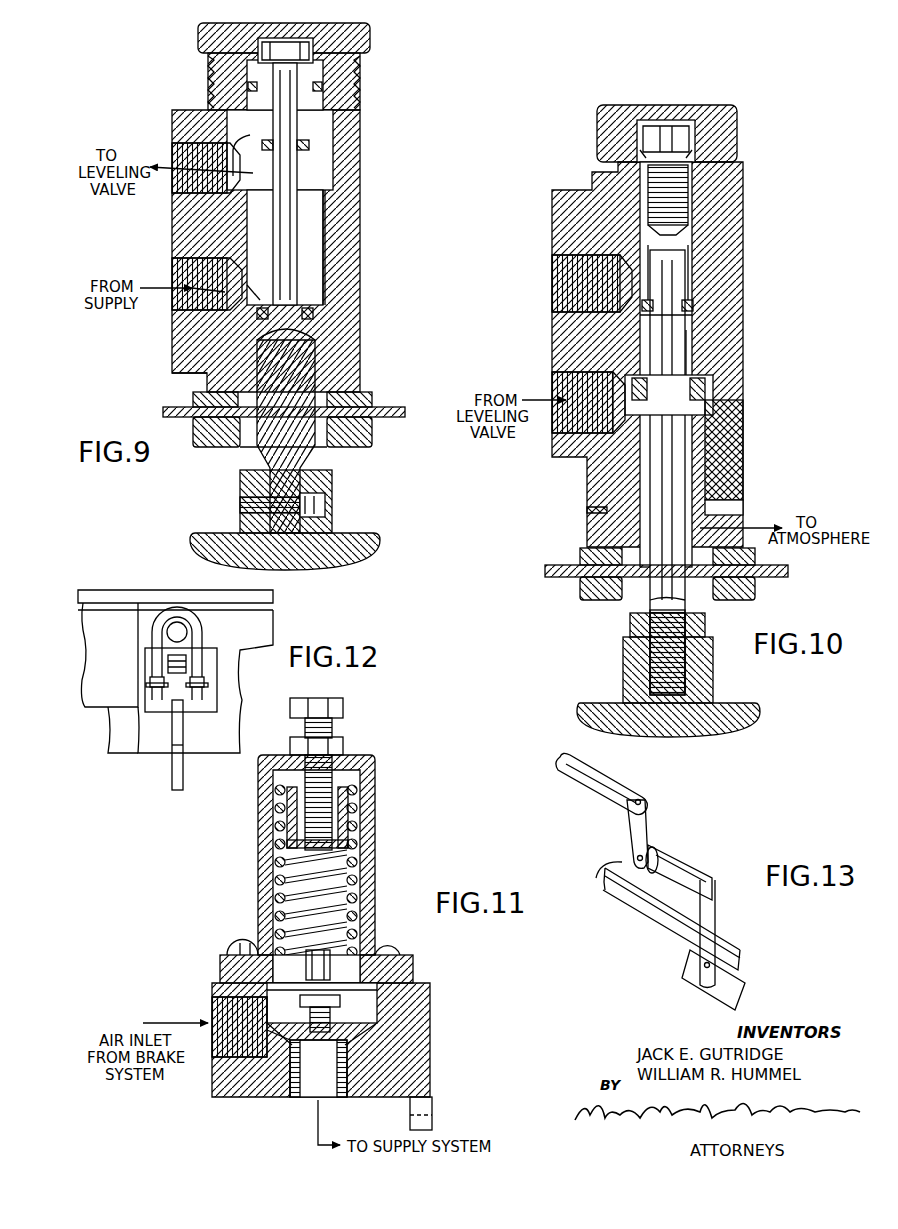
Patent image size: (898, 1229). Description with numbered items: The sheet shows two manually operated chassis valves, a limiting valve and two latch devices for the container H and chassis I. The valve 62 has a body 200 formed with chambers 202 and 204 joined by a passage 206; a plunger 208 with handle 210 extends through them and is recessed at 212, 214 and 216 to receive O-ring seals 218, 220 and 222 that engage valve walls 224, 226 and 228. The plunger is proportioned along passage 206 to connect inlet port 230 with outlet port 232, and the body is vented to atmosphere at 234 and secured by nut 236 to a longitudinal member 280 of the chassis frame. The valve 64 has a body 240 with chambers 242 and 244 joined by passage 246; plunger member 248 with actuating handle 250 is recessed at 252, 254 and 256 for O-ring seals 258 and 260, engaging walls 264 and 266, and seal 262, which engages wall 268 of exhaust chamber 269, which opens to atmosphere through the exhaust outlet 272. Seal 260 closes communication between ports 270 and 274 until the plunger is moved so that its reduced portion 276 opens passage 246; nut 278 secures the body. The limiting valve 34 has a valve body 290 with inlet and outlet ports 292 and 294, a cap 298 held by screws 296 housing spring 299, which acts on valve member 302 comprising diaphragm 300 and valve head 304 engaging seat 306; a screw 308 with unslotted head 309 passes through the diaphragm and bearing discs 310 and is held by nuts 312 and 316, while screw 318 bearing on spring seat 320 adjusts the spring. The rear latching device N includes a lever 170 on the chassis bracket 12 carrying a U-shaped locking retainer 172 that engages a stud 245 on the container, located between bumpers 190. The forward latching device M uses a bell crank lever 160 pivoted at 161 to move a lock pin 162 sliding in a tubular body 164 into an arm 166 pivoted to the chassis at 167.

In FIG. 9, the valve 62 is at (172, 62).
In FIG. 9, the body 200 is at (362, 264).
In FIG. 9, the chamber 202 is at (331, 160).
In FIG. 9, the chamber 204 is at (330, 282).
In FIG. 9, the passage 206 is at (304, 230).
In FIG. 9, the plunger 208 is at (300, 350).
In FIG. 9, the handle 210 is at (368, 538).
In FIG. 9, the recess 212 is at (345, 28).
In FIG. 9, the recess 214 is at (300, 146).
In FIG. 9, the recess 216 is at (330, 320).
In FIG. 9, the O-ring seal 218 is at (322, 90).
In FIG. 9, the O-ring seal 220 is at (312, 148).
In FIG. 9, the O-ring seal 222 is at (205, 374).
In FIG. 9, the valve wall 224 is at (257, 25).
In FIG. 9, the valve wall 226 is at (330, 215).
In FIG. 9, the valve wall 228 is at (316, 275).
In FIG. 9, the inlet port 230 is at (178, 312).
In FIG. 9, the outlet port 232 is at (175, 140).
In FIG. 9, the vent 234 is at (315, 27).
In FIG. 9, the nut 236 is at (366, 445).
In FIG. 9, the longitudinal member 280 is at (388, 405).
In FIG. 10, the longitudinal member 280 is at (788, 570).
In FIG. 10, the valve 64 is at (548, 245).
In FIG. 10, the body 240 is at (748, 248).
In FIG. 10, the chamber 242 is at (690, 236).
In FIG. 10, the chamber 244 is at (720, 400).
In FIG. 10, the passage 246 is at (690, 330).
In FIG. 10, the plunger member 248 is at (680, 472).
In FIG. 10, the actuating handle 250 is at (742, 720).
In FIG. 10, the recess 252 is at (698, 158).
In FIG. 10, the recess 254 is at (692, 300).
In FIG. 10, the recess 256 is at (734, 378).
In FIG. 10, the O-ring seal 258 is at (710, 170).
In FIG. 10, the O-ring seal 260 is at (696, 306).
In FIG. 10, the seal 262 is at (702, 395).
In FIG. 10, the wall 264 is at (694, 206).
In FIG. 10, the wall 266 is at (686, 347).
In FIG. 10, the wall 268 is at (705, 440).
In FIG. 10, the exhaust chamber 269 is at (710, 420).
In FIG. 10, the port 270 is at (555, 380).
In FIG. 10, the exhaust port 272 is at (745, 512).
In FIG. 10, the port 274 is at (560, 262).
In FIG. 10, the reduced portion 276 is at (690, 258).
In FIG. 10, the nut 278 is at (590, 602).
In FIG. 12, the bumper 190 is at (110, 605).
In FIG. 12, the stud 245 is at (176, 622).
In FIG. 12, the U-shaped locking retainer 172 is at (205, 636).
In FIG. 12, the container H is at (272, 628).
In FIG. 12, the bracket 12 is at (232, 676).
In FIG. 12, the lever 170 is at (185, 742).
In FIG. 12, the chassis I is at (122, 730).
In FIG. 12, the rear latching device N is at (152, 740).
In FIG. 11, the limiting valve 34 is at (250, 868).
In FIG. 11, the screw 318 is at (328, 770).
In FIG. 11, the spring seat 320 is at (348, 815).
In FIG. 11, the cap 298 is at (376, 845).
In FIG. 11, the spring 299 is at (350, 884).
In FIG. 11, the screw 296 is at (243, 940).
In FIG. 11, the screw 308 is at (330, 955).
In FIG. 11, the nut 312 is at (232, 956).
In FIG. 11, the bearing disc 310 is at (385, 960).
In FIG. 11, the diaphragm 300 is at (400, 964).
In FIG. 11, the inlet port 292 is at (214, 1000).
In FIG. 11, the valve member 302 is at (345, 1004).
In FIG. 11, the valve head 304 is at (340, 1032).
In FIG. 11, the valve body 290 is at (432, 1060).
In FIG. 11, the unslotted head 309 is at (350, 1050).
In FIG. 11, the nut 316 is at (270, 1030).
In FIG. 11, the outlet port 294 is at (300, 1085).
In FIG. 11, the seat 306 is at (330, 1055).
In FIG. 13, the bell crank lever 160 is at (608, 787).
In FIG. 13, the pivot 161 is at (641, 800).
In FIG. 13, the lock pin 162 is at (620, 860).
In FIG. 13, the tubular body 164 is at (680, 858).
In FIG. 13, the forward latching device M is at (722, 848).
In FIG. 13, the arm 166 is at (715, 920).
In FIG. 13, the pivot 167 is at (703, 967).